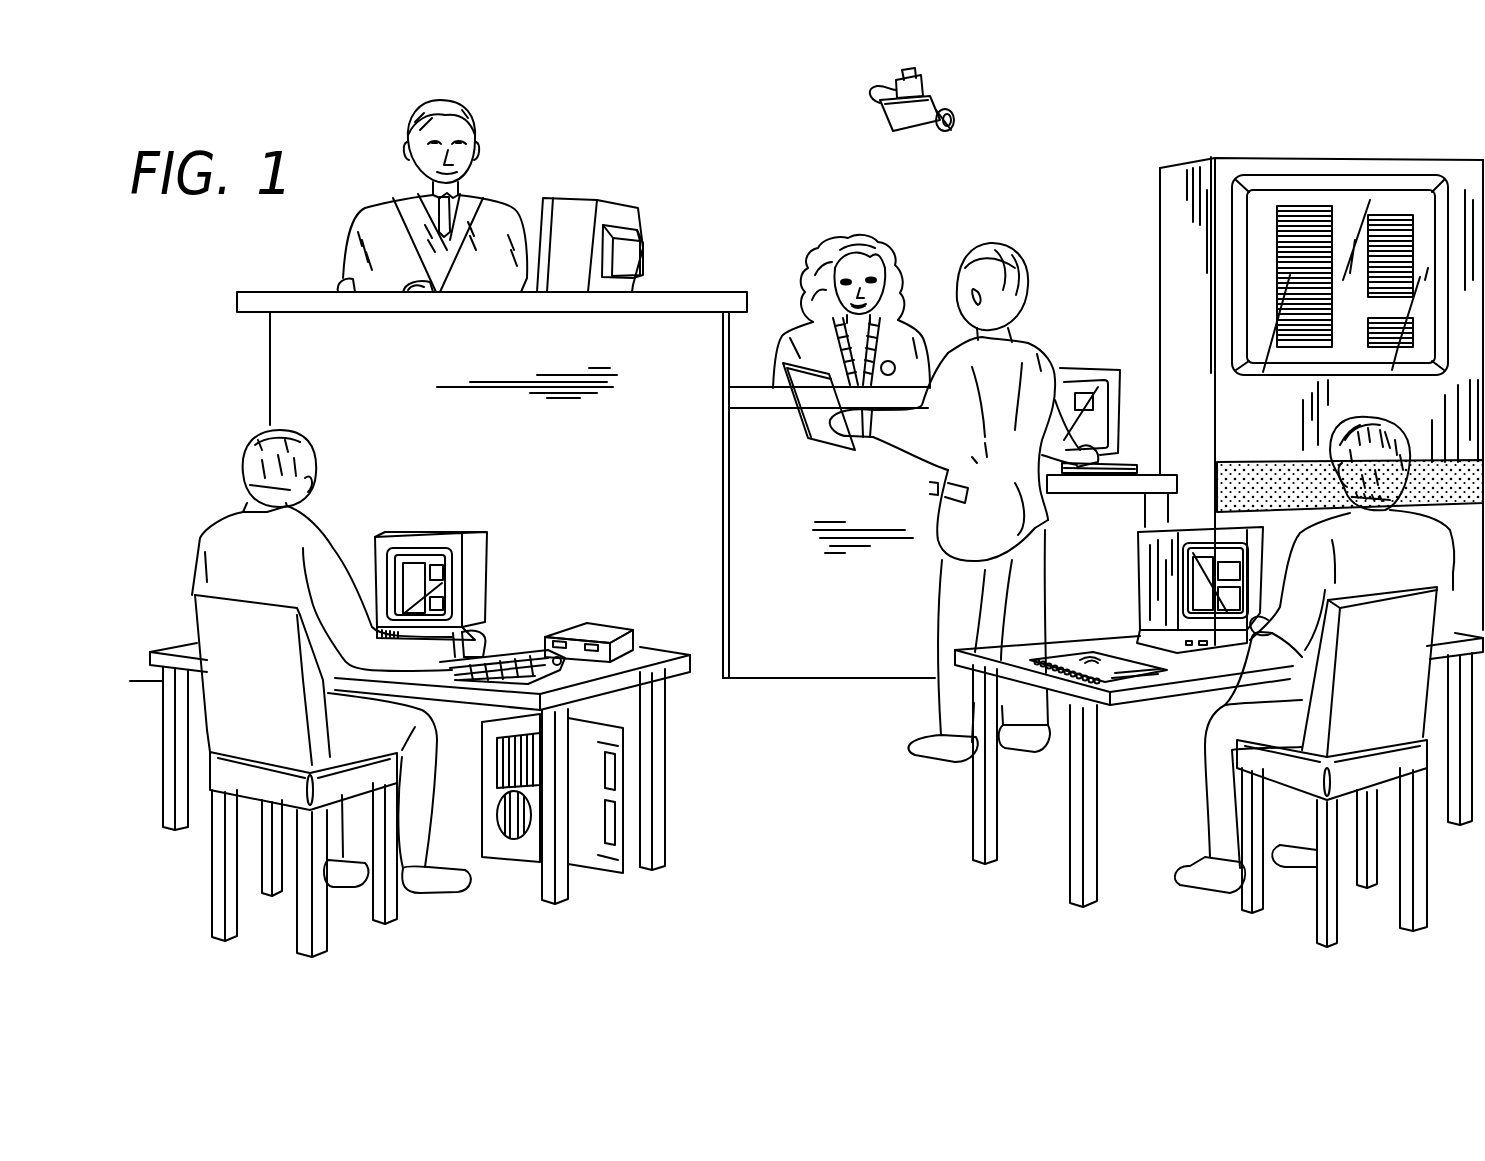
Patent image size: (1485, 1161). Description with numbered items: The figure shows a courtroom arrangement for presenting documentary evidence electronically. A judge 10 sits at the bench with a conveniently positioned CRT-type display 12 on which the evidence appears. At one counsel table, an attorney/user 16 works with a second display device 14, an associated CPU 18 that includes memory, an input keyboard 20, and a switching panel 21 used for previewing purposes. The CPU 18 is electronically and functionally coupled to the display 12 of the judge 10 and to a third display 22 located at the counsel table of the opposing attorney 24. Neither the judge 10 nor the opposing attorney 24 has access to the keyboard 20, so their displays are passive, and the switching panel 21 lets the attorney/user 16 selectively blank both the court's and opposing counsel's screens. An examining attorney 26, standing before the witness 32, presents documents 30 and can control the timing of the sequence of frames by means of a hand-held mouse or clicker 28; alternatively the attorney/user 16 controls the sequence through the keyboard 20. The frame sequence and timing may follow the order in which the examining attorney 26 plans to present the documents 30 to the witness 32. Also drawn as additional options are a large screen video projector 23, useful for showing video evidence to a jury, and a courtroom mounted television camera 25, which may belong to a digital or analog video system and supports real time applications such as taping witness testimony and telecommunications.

The judge 10 is at (398, 173).
The CRT-type display 12 is at (581, 196).
The second display device 14 is at (447, 532).
The attorney/user 16 is at (228, 525).
The CPU 18 is at (617, 775).
The keyboard 20 is at (510, 650).
The switching panel 21 is at (612, 628).
The third display 22 is at (1155, 580).
The large screen video projector 23 is at (1268, 197).
The opposing attorney 24 is at (1338, 537).
The courtroom mounted television camera 25 is at (898, 126).
The examining attorney 26 is at (1047, 345).
The hand-held mouse or clicker 28 is at (1122, 462).
The documents 30 is at (801, 433).
The witness 32 is at (797, 327).